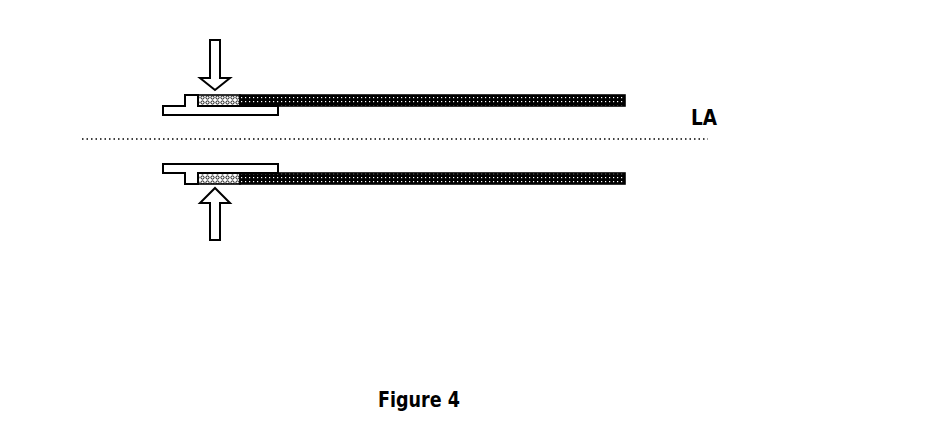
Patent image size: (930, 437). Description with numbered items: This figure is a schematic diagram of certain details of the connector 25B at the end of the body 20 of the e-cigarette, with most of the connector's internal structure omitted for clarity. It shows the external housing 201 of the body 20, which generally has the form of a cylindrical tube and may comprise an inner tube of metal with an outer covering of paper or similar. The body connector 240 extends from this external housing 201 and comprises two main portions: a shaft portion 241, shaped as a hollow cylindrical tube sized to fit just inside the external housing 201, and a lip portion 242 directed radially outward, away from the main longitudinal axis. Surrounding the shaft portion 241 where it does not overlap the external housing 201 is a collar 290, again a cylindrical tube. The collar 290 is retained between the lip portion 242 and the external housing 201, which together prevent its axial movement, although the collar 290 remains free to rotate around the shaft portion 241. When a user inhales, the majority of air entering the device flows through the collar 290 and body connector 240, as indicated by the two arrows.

The body 20 is at (505, 229).
The collar 290 is at (240, 90).
The shaft portion 241 is at (265, 171).
The external housing 201 is at (597, 188).
The connector 25B is at (165, 249).
The body connector 240 is at (182, 111).
The lip portion 242 is at (183, 186).